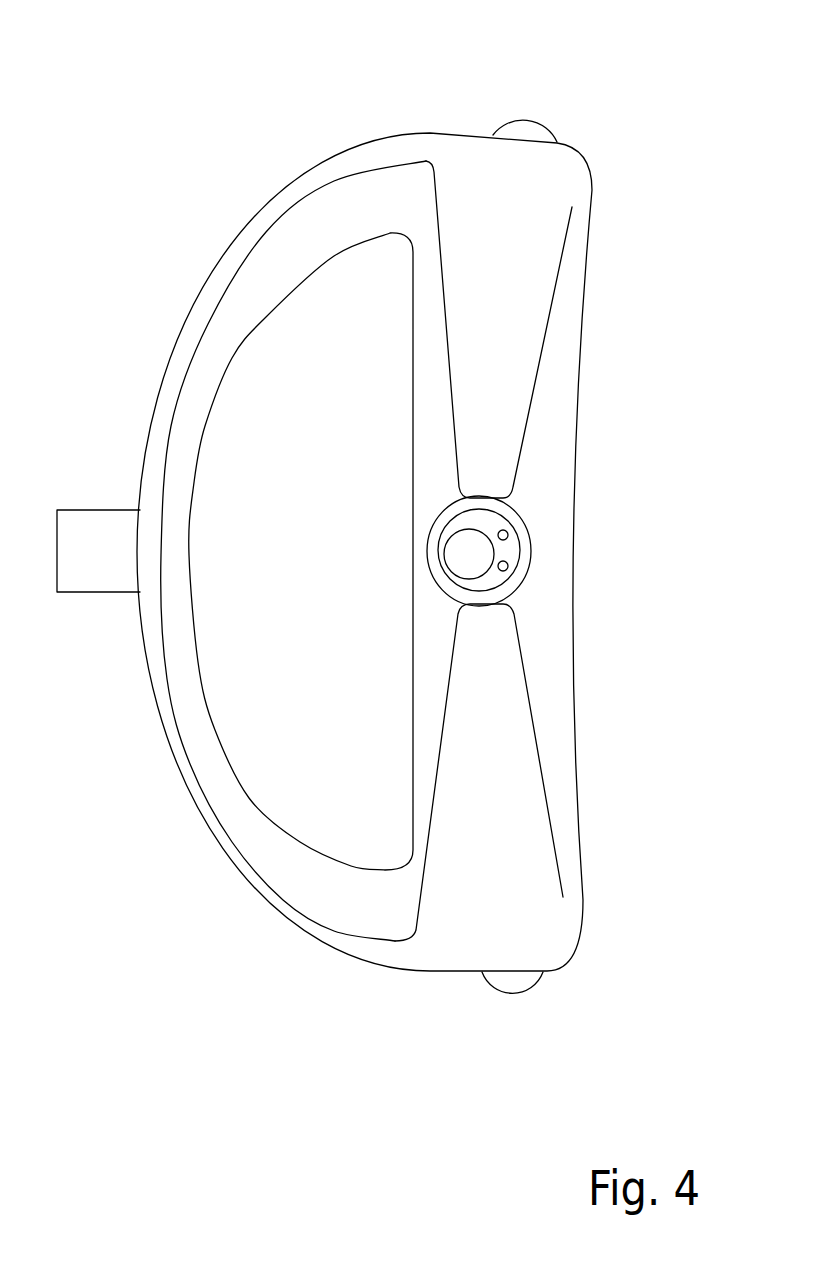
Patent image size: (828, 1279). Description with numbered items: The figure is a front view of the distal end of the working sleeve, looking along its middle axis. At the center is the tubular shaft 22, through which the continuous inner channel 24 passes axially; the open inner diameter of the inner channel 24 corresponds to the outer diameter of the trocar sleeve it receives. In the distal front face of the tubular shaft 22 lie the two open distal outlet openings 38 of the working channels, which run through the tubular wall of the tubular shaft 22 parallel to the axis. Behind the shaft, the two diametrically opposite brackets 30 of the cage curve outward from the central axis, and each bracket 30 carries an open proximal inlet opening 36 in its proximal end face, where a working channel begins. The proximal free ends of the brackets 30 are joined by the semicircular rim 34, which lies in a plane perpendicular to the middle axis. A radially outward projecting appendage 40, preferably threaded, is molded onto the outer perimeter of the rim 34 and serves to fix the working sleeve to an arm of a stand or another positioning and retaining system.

The tubular shaft 22 is at (478, 520).
The inner channel 24 is at (472, 553).
The bracket 30 is at (468, 203).
The rim 34 is at (220, 837).
The proximal inlet opening 36 is at (523, 132).
The distal outlet opening 38 is at (508, 533).
The appendage 40 is at (83, 572).